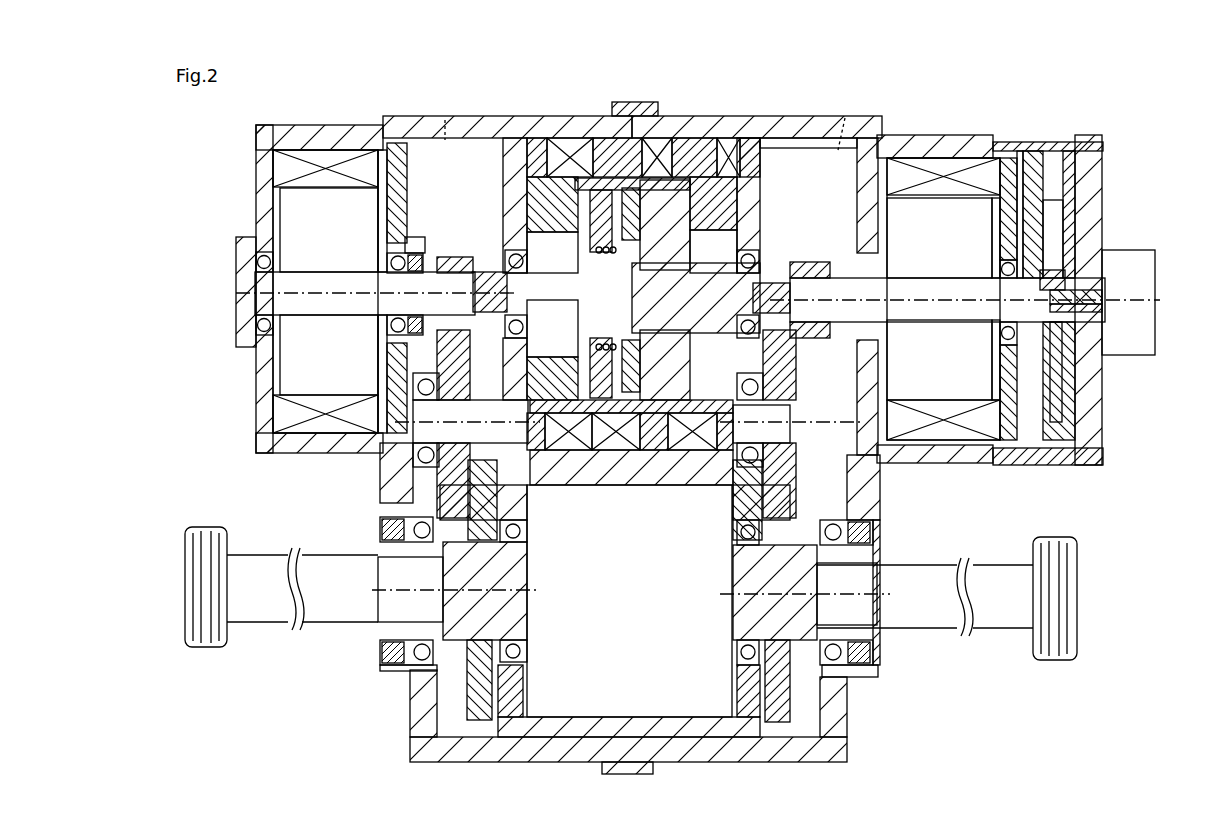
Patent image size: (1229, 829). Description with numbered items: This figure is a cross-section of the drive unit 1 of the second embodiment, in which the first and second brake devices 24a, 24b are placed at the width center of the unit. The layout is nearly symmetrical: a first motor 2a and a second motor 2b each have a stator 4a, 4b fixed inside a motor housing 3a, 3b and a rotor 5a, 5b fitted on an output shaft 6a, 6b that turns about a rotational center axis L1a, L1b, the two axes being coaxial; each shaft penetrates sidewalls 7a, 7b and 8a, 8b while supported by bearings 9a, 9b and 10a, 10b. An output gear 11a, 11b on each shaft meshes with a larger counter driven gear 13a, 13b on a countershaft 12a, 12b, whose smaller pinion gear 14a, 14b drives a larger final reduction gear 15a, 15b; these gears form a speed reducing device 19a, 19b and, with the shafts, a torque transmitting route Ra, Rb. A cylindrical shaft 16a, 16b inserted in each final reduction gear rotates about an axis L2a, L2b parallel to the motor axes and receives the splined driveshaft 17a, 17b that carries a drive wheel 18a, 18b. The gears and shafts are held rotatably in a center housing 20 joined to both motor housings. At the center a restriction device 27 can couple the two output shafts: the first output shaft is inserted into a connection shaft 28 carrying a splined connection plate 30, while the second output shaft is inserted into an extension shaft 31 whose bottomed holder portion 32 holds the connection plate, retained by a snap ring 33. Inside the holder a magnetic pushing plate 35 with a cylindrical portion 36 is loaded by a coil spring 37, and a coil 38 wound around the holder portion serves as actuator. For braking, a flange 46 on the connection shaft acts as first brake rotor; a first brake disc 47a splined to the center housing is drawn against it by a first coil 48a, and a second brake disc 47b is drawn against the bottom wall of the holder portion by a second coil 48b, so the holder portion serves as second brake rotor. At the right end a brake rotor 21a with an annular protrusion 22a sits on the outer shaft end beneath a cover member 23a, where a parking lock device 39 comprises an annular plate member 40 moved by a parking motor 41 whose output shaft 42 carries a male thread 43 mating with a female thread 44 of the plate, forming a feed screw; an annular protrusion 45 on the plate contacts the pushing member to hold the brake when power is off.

The drive unit 1 is at (275, 742).
The first motor 2a is at (1019, 487).
The second motor 2b is at (233, 474).
The first motor housing 3a is at (963, 134).
The second motor housing 3b is at (374, 128).
The first stator 4a is at (964, 465).
The second stator 4b is at (282, 455).
The first rotor 5a is at (985, 463).
The second rotor 5b is at (300, 376).
The first output shaft 6a is at (918, 460).
The second output shaft 6b is at (258, 336).
The first sidewall 7a is at (898, 160).
The second sidewall 7b is at (406, 184).
The first sidewall 8a is at (1004, 156).
The second sidewall 8b is at (270, 172).
The first bearing 9a is at (897, 458).
The second bearing 9b is at (292, 397).
The first bearing 10a is at (1102, 354).
The second bearing 10b is at (255, 312).
The first output gear 11a is at (812, 262).
The second output gear 11b is at (455, 256).
The first countershaft 12a is at (733, 440).
The second countershaft 12b is at (518, 436).
The first counter driven gear 13a is at (778, 334).
The second counter driven gear 13b is at (470, 332).
The first pinion gear 14a is at (762, 388).
The second pinion gear 14b is at (440, 388).
The first final reduction gear 15a is at (790, 707).
The second final reduction gear 15b is at (470, 700).
The first cylindrical shaft 16a is at (876, 642).
The second cylindrical shaft 16b is at (380, 632).
The first driveshaft 17a is at (932, 612).
The second driveshaft 17b is at (318, 614).
The first drive wheel 18a is at (1078, 601).
The second drive wheel 18b is at (207, 650).
The first speed reducing device 19a is at (944, 521).
The second speed reducing device 19b is at (338, 488).
The center housing 20 is at (812, 128).
The first brake rotor 21a is at (1024, 142).
The annular protrusion 22a is at (1048, 150).
The first cover member 23a is at (1096, 216).
The first brake device 24a is at (779, 105).
The second brake device 24b is at (507, 103).
The restriction device 27 is at (612, 78).
The connection shaft 28 is at (782, 280).
The connection plate 30 is at (650, 247).
The extension shaft 31 is at (566, 302).
The holder portion 32 is at (590, 246).
The snap ring 33 is at (740, 196).
The pushing plate 35 is at (648, 130).
The cylindrical portion 36 is at (604, 256).
The coil spring 37 is at (606, 342).
The coil 38 is at (626, 134).
The parking lock device 39 is at (1120, 382).
The plate member 40 is at (1082, 406).
The parking motor 41 is at (1145, 344).
The output shaft 42 is at (1102, 297).
The male thread 43 is at (1064, 283).
The female thread 44 is at (1100, 310).
The annular protrusion 45 is at (1090, 441).
The flange 46 is at (672, 125).
The first brake disc 47a is at (748, 136).
The second brake disc 47b is at (548, 137).
The first coil 48a is at (720, 136).
The second coil 48b is at (573, 136).
The first torque transmitting route Ra is at (846, 118).
The second torque transmitting route Rb is at (449, 118).
The rotational center axis L1a is at (1060, 266).
The rotational center axis L1b is at (245, 281).
The rotational center axis L2a is at (885, 572).
The rotational center axis L2b is at (392, 575).